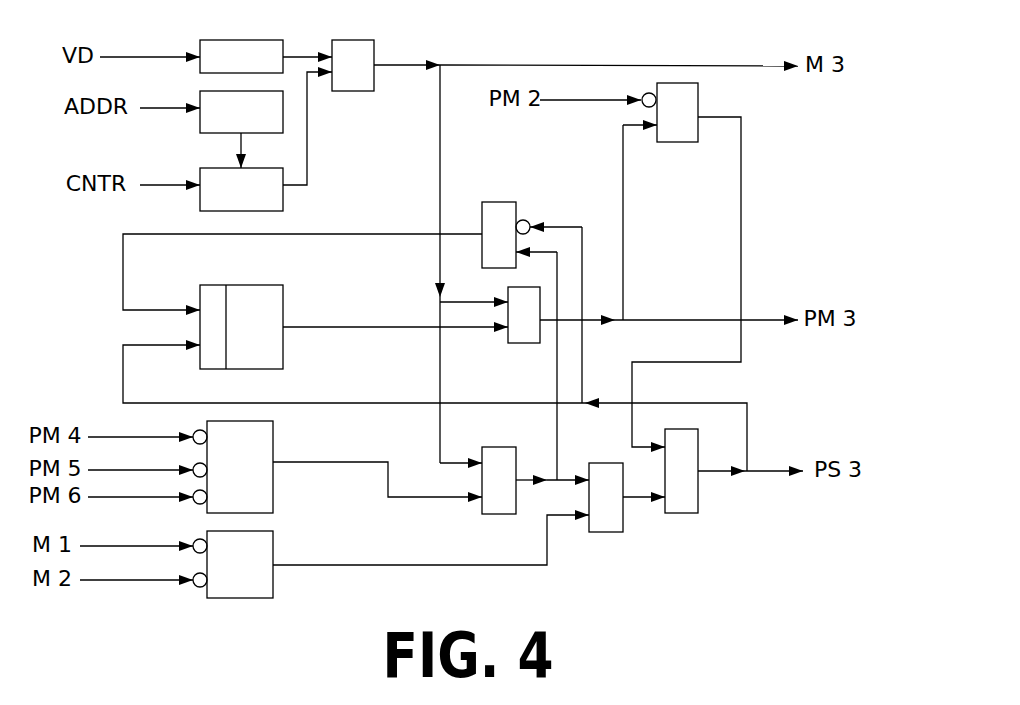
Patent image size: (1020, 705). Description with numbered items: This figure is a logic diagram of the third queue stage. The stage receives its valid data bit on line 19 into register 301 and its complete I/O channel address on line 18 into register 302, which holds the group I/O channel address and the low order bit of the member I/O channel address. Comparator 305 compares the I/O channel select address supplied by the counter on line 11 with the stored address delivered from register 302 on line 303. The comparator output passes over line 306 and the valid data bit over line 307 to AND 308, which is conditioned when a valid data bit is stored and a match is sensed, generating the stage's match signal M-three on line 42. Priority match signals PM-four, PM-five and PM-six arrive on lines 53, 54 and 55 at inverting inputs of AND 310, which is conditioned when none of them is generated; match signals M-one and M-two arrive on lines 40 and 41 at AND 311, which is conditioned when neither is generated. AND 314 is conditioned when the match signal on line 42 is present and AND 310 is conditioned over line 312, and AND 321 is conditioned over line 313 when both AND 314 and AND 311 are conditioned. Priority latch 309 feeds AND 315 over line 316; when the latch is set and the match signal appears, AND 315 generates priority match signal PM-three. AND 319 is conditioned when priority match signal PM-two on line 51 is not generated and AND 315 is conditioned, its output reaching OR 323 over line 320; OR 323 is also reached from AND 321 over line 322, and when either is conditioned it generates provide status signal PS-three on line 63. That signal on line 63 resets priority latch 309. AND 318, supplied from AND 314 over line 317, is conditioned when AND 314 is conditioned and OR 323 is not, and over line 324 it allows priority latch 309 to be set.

The line 19 is at (150, 30).
The register 301 is at (242, 38).
The register 302 is at (212, 101).
The line 18 is at (156, 126).
The line 303 is at (198, 150).
The line 11 is at (154, 165).
The comparator 305 is at (272, 198).
The comparator output line 306 is at (335, 128).
The register output line 307 is at (321, 30).
The AND 308 is at (379, 47).
The line 42 is at (586, 242).
The line 51 is at (596, 115).
The AND 318 is at (532, 280).
The AND 319 is at (675, 201).
The AND gate output line 320 is at (725, 282).
The latch set line 324 is at (302, 272).
The priority latch 309 is at (279, 313).
The latch output line 316 is at (395, 345).
The AND 315 is at (501, 330).
The line 53 is at (433, 351).
The line 54 is at (147, 459).
The line 55 is at (147, 506).
The line 40 is at (143, 557).
The line 41 is at (143, 589).
The AND 310 is at (286, 461).
The AND 311 is at (286, 559).
The AND gate output line 312 is at (377, 503).
The AND gate output line 313 is at (431, 558).
The AND 314 is at (522, 462).
The signal line 317 is at (567, 366).
The AND 321 is at (592, 514).
The AND gate output line 322 is at (657, 519).
The OR 323 is at (720, 477).
The line 63 is at (468, 408).